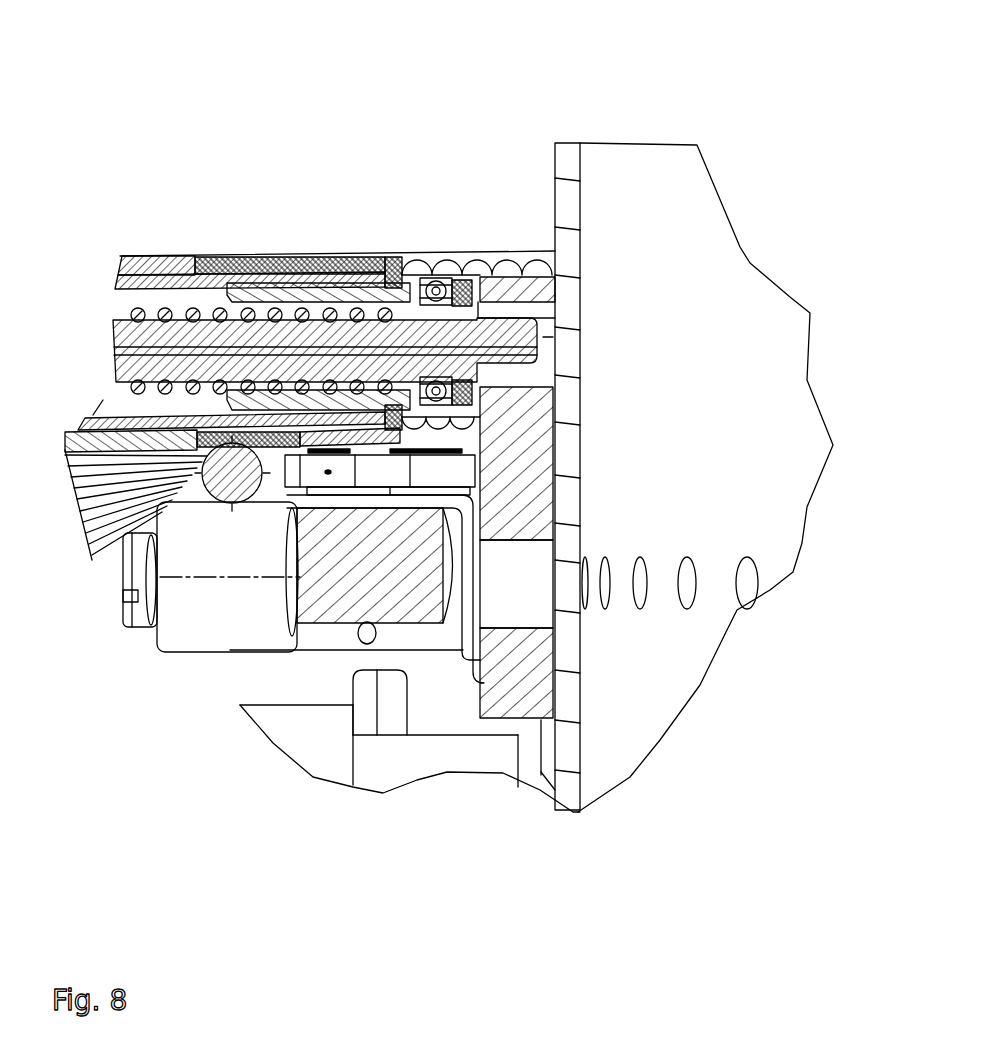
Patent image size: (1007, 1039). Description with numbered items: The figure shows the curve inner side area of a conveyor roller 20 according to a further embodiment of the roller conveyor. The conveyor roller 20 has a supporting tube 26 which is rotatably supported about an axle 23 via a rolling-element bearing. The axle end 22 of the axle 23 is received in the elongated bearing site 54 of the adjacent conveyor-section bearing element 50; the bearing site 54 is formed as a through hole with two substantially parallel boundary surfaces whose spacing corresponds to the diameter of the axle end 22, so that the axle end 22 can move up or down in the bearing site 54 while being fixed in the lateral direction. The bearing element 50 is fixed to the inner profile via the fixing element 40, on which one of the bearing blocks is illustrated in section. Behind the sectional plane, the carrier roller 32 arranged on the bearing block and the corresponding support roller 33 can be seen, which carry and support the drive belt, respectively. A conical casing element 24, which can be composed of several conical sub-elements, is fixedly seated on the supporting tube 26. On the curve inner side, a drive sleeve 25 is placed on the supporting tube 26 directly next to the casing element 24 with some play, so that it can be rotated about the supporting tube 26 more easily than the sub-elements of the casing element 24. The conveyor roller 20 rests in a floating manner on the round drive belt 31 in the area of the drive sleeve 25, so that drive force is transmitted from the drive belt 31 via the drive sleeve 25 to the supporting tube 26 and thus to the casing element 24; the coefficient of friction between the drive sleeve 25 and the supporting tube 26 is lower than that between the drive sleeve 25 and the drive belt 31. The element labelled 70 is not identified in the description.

The conveyor roller 20 is at (90, 275).
The axle end 22 is at (520, 320).
The axle 23 is at (268, 340).
The conical casing element 24 is at (165, 264).
The drive sleeve 25 is at (218, 265).
The supporting tube 26 is at (265, 283).
The round drive belt 31 is at (245, 468).
The carrier roller 32 is at (217, 620).
The support roller 33 is at (377, 475).
The fixing element 40 is at (468, 547).
The conveyor-section bearing element 50 is at (520, 433).
The bearing site 54 is at (543, 317).
The cylinder 70 is at (355, 593).